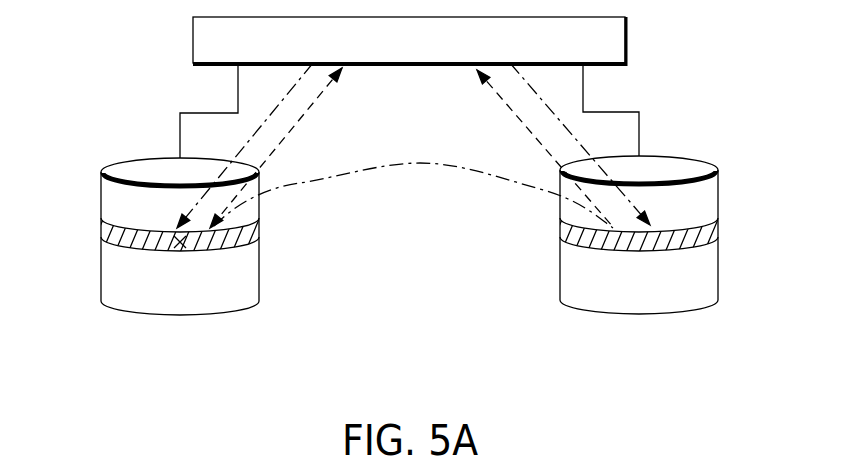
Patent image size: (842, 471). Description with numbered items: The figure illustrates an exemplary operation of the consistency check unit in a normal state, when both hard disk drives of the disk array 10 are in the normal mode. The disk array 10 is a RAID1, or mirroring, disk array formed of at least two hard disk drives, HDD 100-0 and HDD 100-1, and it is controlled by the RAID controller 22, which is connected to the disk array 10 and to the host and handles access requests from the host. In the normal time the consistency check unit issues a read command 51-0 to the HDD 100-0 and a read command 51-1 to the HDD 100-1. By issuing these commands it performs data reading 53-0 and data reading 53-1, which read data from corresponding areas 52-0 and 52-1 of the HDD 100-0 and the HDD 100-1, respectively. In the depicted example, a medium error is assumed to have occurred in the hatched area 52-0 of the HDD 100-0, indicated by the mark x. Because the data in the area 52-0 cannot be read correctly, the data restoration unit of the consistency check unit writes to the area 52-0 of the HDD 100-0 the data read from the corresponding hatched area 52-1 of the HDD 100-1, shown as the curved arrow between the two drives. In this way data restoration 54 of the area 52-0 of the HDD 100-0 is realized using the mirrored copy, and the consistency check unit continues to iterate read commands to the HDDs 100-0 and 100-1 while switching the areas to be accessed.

The disk array 10 is at (424, 333).
The RAID controller 22 is at (628, 41).
The read command 51-0 is at (243, 148).
The read command 51-1 is at (577, 142).
The area 52-0 is at (101, 235).
The area 52-1 is at (718, 226).
The data reading 53-0 is at (288, 132).
The data reading 53-1 is at (523, 125).
The data restoration 54 is at (381, 168).
The hard disk drive 100-0 is at (177, 309).
The hard disk drive 100-1 is at (638, 309).